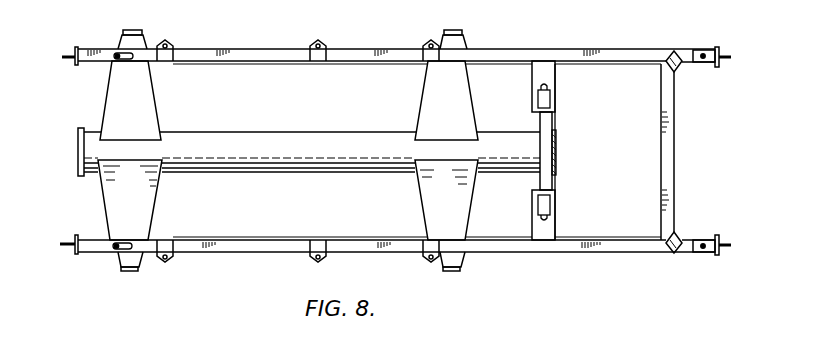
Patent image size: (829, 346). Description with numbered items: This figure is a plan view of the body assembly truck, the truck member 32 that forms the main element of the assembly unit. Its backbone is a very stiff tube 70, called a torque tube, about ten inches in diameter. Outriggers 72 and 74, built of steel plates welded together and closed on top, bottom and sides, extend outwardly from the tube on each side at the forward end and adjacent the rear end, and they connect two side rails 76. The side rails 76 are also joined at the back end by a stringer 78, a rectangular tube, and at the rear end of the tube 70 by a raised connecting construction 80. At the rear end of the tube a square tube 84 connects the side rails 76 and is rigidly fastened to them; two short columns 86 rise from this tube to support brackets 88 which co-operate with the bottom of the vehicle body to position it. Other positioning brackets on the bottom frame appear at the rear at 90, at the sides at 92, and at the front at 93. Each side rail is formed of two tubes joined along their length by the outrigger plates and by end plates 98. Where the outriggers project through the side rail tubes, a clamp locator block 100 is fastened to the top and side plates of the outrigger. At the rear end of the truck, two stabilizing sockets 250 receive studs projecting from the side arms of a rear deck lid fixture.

The truck member 32 is at (470, 42).
The tube 70 is at (270, 132).
The outrigger 72 is at (143, 91).
The outrigger 74 is at (436, 88).
The side rails 76 is at (246, 49).
The stringer 78 is at (675, 112).
The raised connecting construction 80 is at (554, 124).
The square tube 84 is at (553, 151).
The columns 86 is at (556, 94).
The brackets 88 is at (538, 97).
The positioning brackets 90 is at (672, 51).
The positioning brackets 92 is at (171, 44).
The positioning brackets 93 is at (120, 53).
The end plates 98 is at (74, 60).
The clamp locator block 100 is at (132, 31).
The stabilizing sockets 250 is at (702, 49).